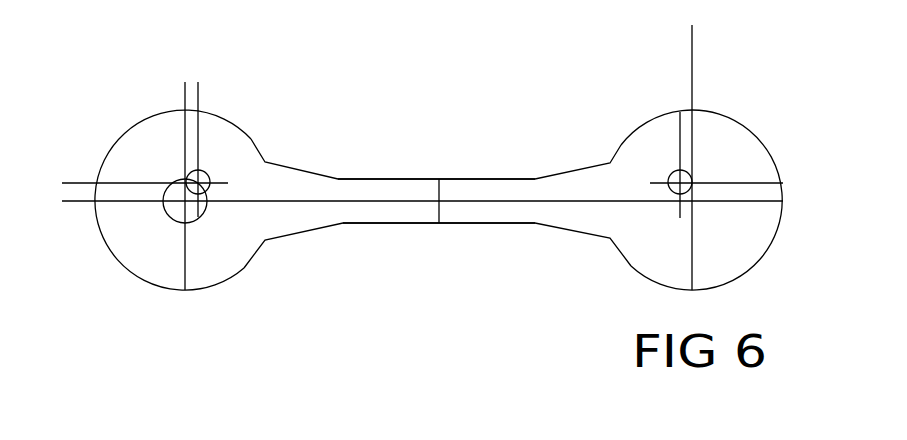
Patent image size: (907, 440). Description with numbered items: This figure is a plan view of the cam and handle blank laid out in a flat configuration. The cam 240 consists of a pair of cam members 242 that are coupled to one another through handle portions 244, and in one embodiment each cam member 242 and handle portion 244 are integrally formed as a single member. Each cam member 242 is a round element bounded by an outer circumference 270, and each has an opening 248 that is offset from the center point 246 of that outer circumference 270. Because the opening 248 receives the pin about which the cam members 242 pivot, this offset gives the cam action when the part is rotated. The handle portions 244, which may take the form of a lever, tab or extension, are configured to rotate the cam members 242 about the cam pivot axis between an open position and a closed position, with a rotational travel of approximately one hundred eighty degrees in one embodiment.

The cam 240 is at (130, 315).
The cam member 242 is at (133, 167).
The handle portion 244 is at (375, 179).
The center point 246 is at (190, 218).
The opening 248 is at (198, 170).
The outer circumference 270 is at (175, 109).